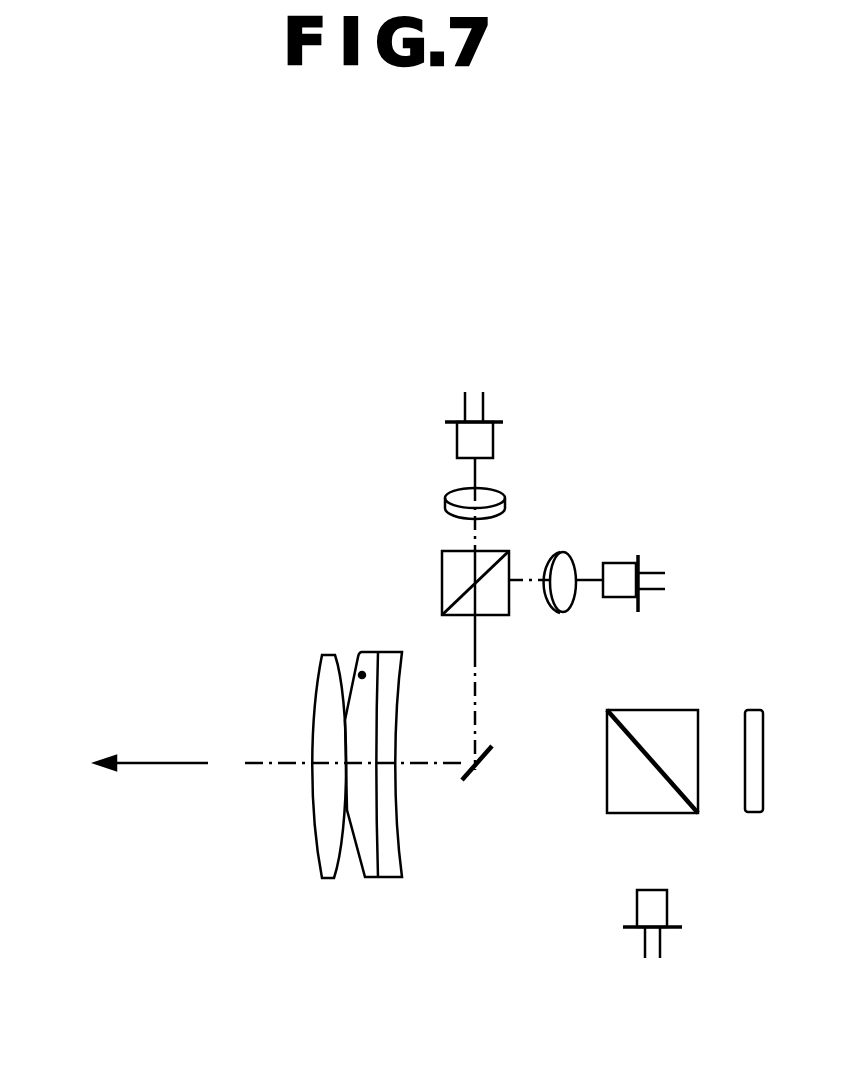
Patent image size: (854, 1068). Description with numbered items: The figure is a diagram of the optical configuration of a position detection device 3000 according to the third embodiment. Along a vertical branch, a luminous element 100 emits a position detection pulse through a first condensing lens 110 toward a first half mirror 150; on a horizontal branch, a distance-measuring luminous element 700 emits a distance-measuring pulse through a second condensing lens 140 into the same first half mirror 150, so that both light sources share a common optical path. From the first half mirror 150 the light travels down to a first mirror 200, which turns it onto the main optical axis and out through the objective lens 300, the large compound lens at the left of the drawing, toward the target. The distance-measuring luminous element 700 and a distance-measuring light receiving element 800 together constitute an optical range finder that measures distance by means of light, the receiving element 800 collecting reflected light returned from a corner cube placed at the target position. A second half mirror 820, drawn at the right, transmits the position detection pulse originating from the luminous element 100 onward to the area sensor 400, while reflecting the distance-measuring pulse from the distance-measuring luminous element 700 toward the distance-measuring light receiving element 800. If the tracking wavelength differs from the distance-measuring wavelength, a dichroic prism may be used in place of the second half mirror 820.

The position detection device 3000 is at (258, 668).
The objective lens 300 is at (327, 655).
The first mirror 200 is at (484, 761).
The luminous element 100 is at (456, 420).
The first condensing lens 110 is at (446, 500).
The first half mirror 150 is at (441, 576).
The second condensing lens 140 is at (563, 552).
The distance-measuring luminous element 700 is at (648, 562).
The second half mirror 820 is at (655, 710).
The area sensor 400 is at (757, 710).
The distance-measuring light receiving element 800 is at (637, 918).